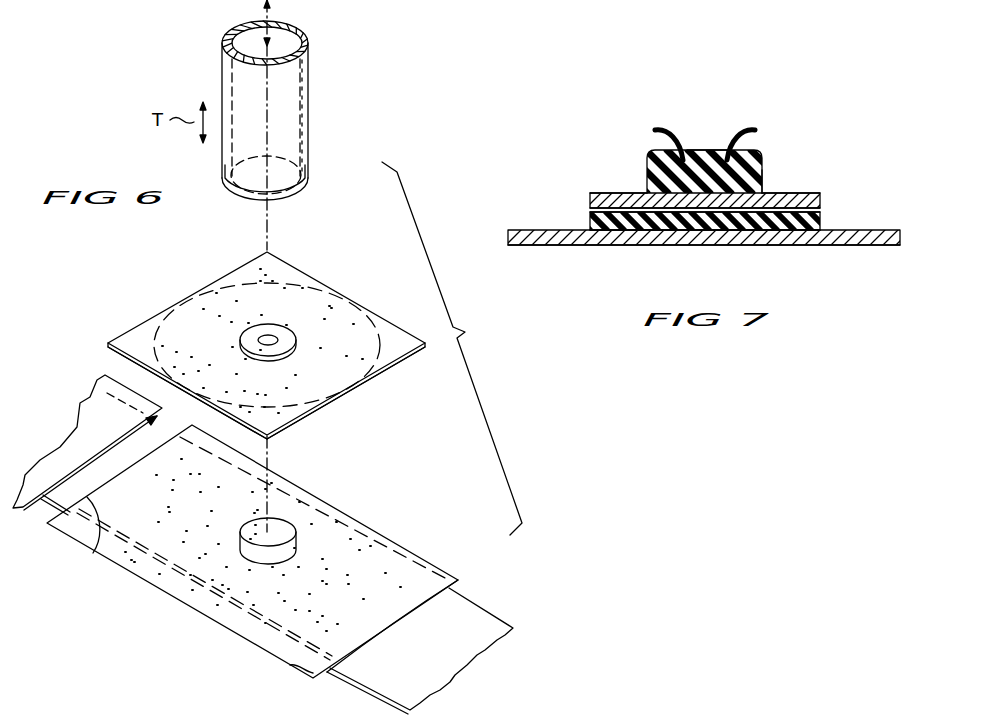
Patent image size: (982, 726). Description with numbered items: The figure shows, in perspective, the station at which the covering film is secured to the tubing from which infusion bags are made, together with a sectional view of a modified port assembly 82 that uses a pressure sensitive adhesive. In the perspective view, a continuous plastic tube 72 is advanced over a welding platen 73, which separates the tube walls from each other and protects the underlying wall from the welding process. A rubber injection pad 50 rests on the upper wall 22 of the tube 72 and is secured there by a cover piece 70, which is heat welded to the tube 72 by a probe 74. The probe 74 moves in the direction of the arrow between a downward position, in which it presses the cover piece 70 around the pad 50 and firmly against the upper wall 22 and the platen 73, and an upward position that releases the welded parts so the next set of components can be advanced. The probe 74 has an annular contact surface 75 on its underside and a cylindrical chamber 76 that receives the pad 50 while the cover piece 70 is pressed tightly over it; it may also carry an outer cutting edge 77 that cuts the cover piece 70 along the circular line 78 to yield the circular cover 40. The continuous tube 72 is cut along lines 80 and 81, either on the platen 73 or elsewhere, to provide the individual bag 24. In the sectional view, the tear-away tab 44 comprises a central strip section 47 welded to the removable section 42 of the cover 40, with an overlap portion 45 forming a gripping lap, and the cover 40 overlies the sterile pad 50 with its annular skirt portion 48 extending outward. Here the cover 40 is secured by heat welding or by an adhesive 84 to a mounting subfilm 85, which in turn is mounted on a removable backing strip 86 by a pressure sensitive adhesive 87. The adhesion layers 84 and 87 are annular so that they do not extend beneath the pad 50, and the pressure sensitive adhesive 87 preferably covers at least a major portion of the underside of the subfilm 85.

In FIG. 6, the bag wall 22 is at (303, 497).
In FIG. 6, the infusion bag 24 is at (343, 506).
In FIG. 7, the cover 40 is at (652, 160).
In FIG. 7, the removable cover section 42 is at (717, 156).
In FIG. 6, the tear-away tab 44 is at (234, 333).
In FIG. 7, the tear-away tab 44 is at (660, 108).
In FIG. 6, the overlap portion 45 is at (293, 340).
In FIG. 6, the central section 47 is at (270, 335).
In FIG. 7, the central section 47 is at (700, 146).
In FIG. 7, the annular skirt portion 48 is at (610, 193).
In FIG. 6, the injection pad 50 is at (298, 543).
In FIG. 7, the injection pad 50 is at (763, 192).
In FIG. 6, the cover piece 70 is at (388, 365).
In FIG. 6, the continuous plastic tube 72 is at (80, 397).
In FIG. 6, the welding platen 73 is at (477, 613).
In FIG. 6, the probe 74 is at (308, 101).
In FIG. 6, the annular contact surface 75 is at (312, 192).
In FIG. 6, the cylindrical chamber 76 is at (285, 40).
In FIG. 6, the outer cutting edge 77 is at (232, 195).
In FIG. 6, the cutting line 78 is at (378, 330).
In FIG. 6, the cutting line 80 is at (94, 552).
In FIG. 6, the cutting line 81 is at (291, 665).
In FIG. 7, the fastener assembly 82 is at (553, 148).
In FIG. 7, the adhesive 84 is at (813, 193).
In FIG. 7, the mounting subfilm 85 is at (820, 212).
In FIG. 7, the removable backing strip 86 is at (593, 246).
In FIG. 7, the pressure sensitive adhesive 87 is at (793, 237).